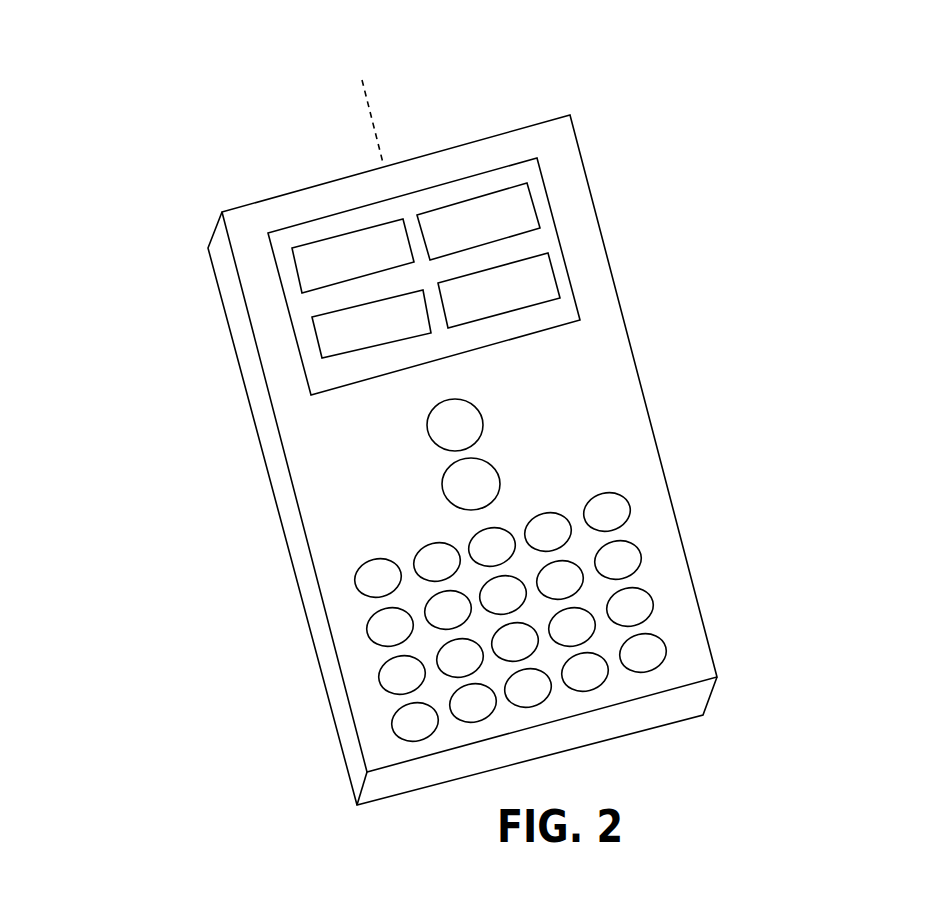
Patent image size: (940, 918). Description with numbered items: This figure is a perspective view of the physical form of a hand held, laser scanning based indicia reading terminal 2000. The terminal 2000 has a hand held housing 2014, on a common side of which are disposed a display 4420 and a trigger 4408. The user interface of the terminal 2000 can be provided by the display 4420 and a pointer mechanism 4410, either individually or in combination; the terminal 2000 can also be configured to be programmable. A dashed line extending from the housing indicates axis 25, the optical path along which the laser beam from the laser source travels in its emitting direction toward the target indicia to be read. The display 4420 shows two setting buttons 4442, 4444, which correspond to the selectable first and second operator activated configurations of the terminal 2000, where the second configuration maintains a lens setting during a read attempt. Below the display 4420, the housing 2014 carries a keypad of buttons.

The indicia reading terminal 2000 is at (672, 74).
The axis 25 is at (377, 132).
The display 4420 is at (307, 382).
The setting 1 selection button 4442 is at (297, 277).
The setting 2 selection button 4444 is at (313, 347).
The trigger 4408 is at (483, 418).
The pointer mechanism 4410 is at (500, 477).
The hand held housing 2014 is at (692, 655).